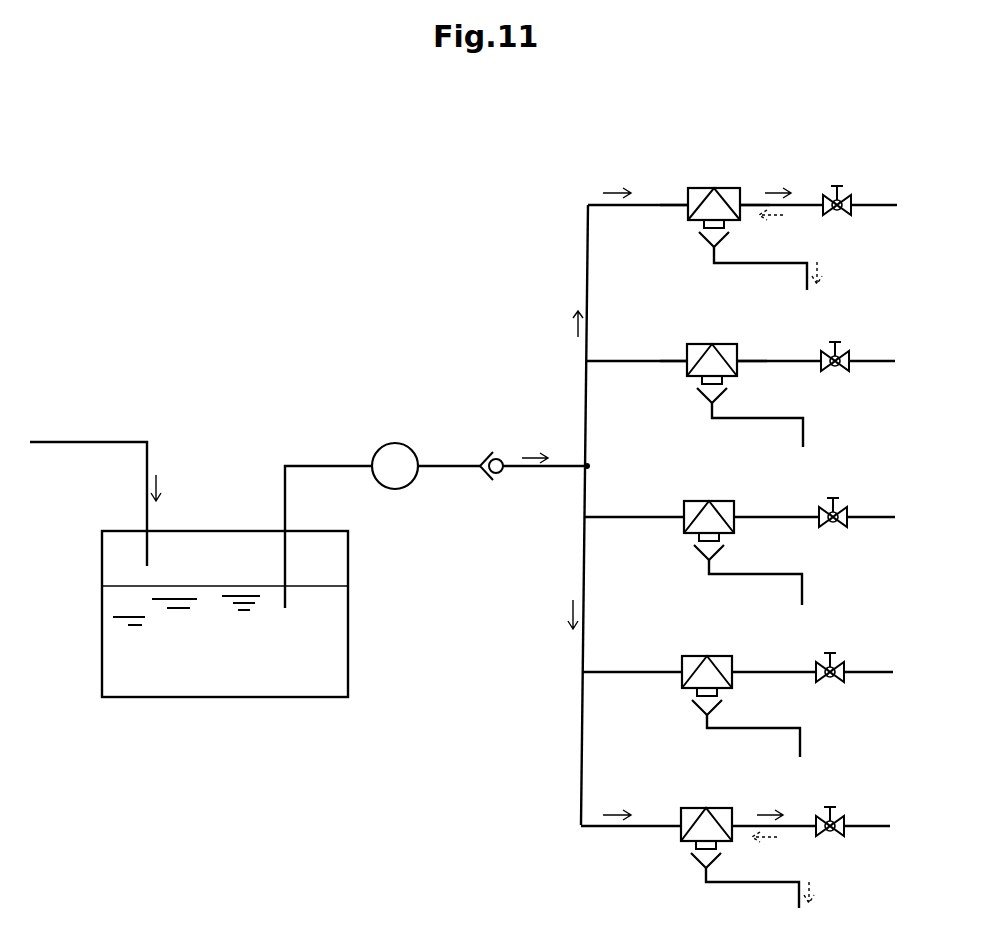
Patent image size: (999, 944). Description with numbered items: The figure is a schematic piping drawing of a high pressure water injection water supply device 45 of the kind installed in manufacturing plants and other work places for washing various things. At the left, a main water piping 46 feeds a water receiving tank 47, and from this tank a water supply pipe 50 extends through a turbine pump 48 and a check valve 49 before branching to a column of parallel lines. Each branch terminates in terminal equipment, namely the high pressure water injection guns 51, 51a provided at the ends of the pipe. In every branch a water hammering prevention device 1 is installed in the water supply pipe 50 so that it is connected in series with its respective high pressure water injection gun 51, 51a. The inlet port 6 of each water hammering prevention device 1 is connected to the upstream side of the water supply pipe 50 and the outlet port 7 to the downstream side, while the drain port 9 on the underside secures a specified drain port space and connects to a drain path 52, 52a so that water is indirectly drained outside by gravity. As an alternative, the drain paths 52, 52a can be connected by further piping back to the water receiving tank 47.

The water hammering prevention device 1 is at (718, 188).
The inlet port 6 is at (688, 212).
The outlet port 7 is at (740, 205).
The drain port 9 is at (724, 224).
The high pressure water injection water supply device 45 is at (439, 348).
The main water piping 46 is at (103, 442).
The water receiving tank 47 is at (308, 652).
The turbine pump 48 is at (400, 480).
The check valve 49 is at (500, 478).
The water supply pipe 50 is at (587, 398).
The high pressure water injection gun 51 is at (853, 210).
The high pressure water injection gun 51a is at (850, 366).
The drain path 52 is at (753, 263).
The drain path 52a is at (755, 418).